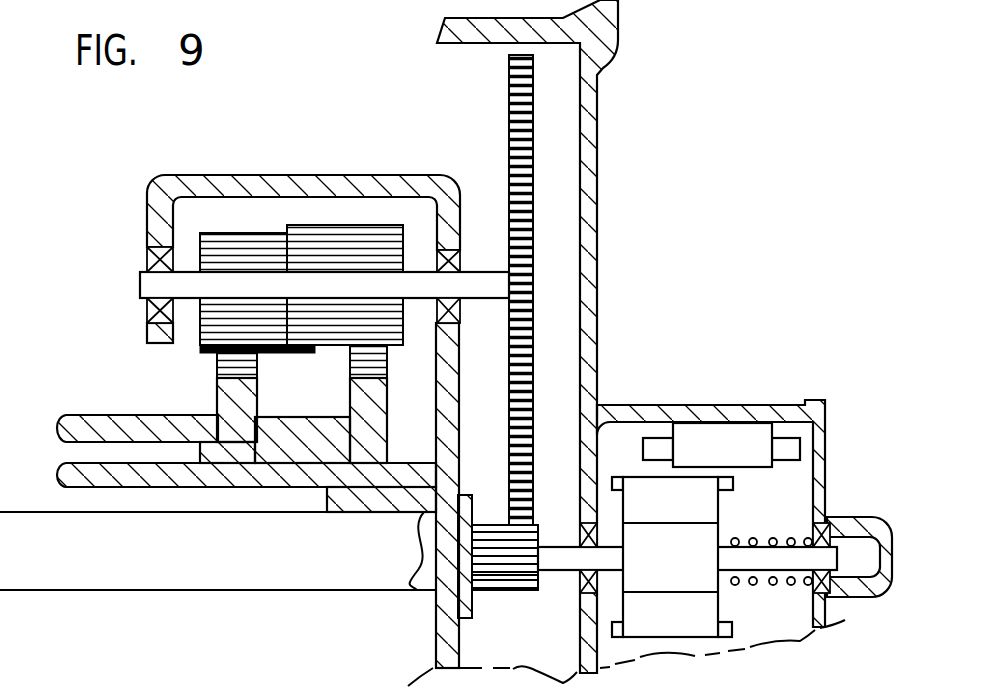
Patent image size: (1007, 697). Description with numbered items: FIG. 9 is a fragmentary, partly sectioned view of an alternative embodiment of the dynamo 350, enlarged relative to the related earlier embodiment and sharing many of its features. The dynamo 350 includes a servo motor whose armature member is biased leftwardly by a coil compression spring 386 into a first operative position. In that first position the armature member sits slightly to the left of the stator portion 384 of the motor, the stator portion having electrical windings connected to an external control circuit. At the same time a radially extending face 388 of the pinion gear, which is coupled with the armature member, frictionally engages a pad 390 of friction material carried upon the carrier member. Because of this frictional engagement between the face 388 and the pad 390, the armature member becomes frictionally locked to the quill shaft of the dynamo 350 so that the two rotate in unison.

The dynamo 350 is at (259, 158).
The stator portion 384 is at (745, 461).
The coil compression spring 386 is at (773, 586).
The radially extending face 388 is at (463, 602).
The pad of friction material 390 is at (462, 494).